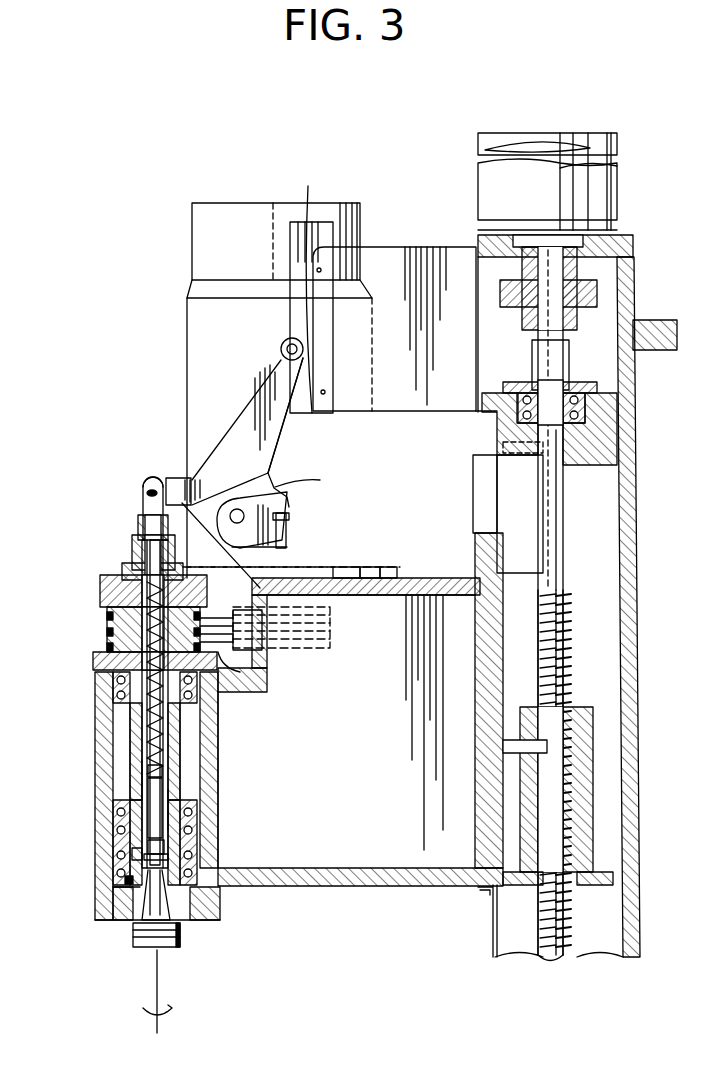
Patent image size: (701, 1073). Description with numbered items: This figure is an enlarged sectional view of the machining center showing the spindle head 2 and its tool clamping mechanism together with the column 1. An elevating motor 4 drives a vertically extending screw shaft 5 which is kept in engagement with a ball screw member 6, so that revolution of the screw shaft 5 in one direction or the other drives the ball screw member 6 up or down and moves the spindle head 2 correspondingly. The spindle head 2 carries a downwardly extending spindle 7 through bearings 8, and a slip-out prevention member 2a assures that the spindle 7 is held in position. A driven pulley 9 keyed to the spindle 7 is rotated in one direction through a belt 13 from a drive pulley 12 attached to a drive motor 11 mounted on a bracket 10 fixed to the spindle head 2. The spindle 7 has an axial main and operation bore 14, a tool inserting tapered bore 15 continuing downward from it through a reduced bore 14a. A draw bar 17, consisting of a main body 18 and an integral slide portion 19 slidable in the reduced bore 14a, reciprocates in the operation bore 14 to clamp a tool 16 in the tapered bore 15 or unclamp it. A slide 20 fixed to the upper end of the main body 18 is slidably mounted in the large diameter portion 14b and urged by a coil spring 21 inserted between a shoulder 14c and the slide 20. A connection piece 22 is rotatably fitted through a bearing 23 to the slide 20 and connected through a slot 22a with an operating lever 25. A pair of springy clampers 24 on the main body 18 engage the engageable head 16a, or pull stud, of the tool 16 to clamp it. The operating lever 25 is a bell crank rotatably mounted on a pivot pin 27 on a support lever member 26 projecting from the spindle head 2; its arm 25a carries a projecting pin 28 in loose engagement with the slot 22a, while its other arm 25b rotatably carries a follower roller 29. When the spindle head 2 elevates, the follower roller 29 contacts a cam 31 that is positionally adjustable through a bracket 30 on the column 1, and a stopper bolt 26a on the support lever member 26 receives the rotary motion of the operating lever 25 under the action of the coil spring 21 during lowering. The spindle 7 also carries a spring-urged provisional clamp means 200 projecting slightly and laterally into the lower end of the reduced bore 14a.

The column 1 is at (630, 445).
The spindle head 2 is at (95, 755).
The slip-out prevention member 2a is at (110, 915).
The elevating motor 4 is at (612, 188).
The screw shaft 5 is at (565, 596).
The ball screw member 6 is at (590, 760).
The spindle 7 is at (130, 790).
The bearings 8 is at (113, 690).
The driven pulley 9 is at (107, 630).
The bracket 10 is at (365, 576).
The drive motor 11 is at (188, 332).
The drive pulley 12 is at (330, 608).
The belt 13 is at (267, 680).
The main and operation bore 14 is at (140, 735).
The reduced bore 14a is at (170, 800).
The large diameter portion 14b is at (105, 590).
The shoulder 14c is at (140, 765).
The tool inserting tapered bore 15 is at (128, 918).
The tool 16 is at (172, 942).
The engageable head 16a is at (168, 850).
The draw bar 17 is at (147, 718).
The main body 18 is at (120, 663).
The slide portion 19 is at (165, 775).
The slide 20 is at (132, 552).
The coil spring 21 is at (165, 750).
The connection piece 22 is at (143, 515).
The slot 22a is at (158, 480).
The bearing 23 is at (138, 523).
The springy clampers 24 is at (132, 853).
The operating lever 25 is at (238, 418).
The arm 25a is at (166, 485).
The arm 25b is at (288, 425).
The support lever member 26 is at (262, 490).
The stopper bolt 26a is at (287, 517).
The pivot pin 27 is at (237, 510).
The projecting pin 28 is at (147, 493).
The follower roller 29 is at (284, 340).
The bracket 30 is at (412, 247).
The cam 31 is at (308, 186).
The provisional clamp means 200 is at (128, 880).